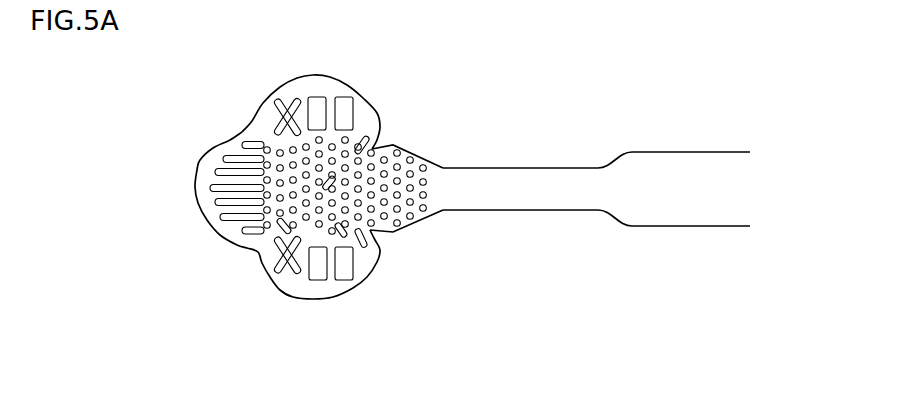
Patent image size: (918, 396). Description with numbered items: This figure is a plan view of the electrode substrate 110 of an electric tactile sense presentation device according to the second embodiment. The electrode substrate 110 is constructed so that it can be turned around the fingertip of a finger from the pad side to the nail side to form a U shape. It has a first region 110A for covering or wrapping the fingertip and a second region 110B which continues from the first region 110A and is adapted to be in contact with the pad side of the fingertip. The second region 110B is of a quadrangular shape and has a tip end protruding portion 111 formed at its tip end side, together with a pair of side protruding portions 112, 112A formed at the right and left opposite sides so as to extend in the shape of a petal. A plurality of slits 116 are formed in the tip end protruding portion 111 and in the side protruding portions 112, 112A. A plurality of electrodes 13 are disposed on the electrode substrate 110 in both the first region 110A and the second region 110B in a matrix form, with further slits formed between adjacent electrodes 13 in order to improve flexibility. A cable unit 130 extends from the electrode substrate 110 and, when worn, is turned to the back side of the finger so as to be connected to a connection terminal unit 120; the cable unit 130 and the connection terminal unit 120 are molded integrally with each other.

The electrode substrate 110 is at (239, 130).
The tip end protruding portion 111 is at (194, 200).
The side protruding portion 112 is at (318, 76).
The lower lobe portion 112A is at (318, 301).
The electrode 13 is at (375, 148).
The slit 116 is at (215, 182).
The second region 110B is at (283, 226).
The first region 110A is at (426, 224).
The cable unit 130 is at (515, 178).
The connection terminal unit 120 is at (681, 165).